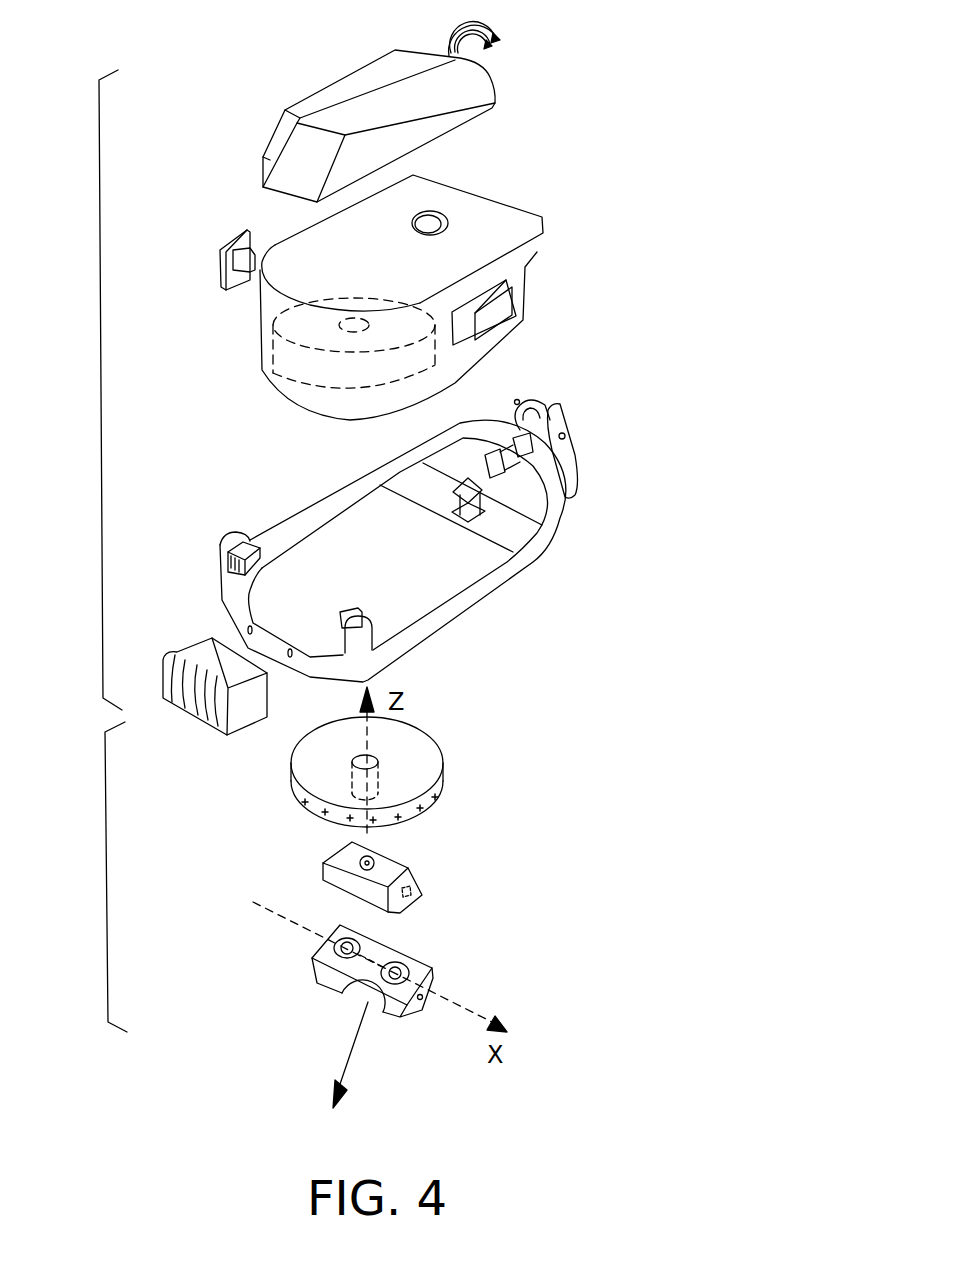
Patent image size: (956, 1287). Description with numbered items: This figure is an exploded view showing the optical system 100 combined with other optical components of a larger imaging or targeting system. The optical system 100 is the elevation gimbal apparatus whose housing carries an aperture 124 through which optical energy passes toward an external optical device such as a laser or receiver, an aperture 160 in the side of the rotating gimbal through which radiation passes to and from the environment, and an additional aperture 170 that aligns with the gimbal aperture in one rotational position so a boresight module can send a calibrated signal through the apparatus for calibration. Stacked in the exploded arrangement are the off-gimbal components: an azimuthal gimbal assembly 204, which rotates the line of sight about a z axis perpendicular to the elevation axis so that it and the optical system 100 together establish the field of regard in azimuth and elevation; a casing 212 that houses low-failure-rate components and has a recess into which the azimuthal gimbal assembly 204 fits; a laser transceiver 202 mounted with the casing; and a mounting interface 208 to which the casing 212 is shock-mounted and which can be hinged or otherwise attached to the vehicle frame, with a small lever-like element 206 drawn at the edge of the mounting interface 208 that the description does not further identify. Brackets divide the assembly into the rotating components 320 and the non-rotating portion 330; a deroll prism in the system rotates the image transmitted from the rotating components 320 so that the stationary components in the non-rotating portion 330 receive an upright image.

The optical system 100 is at (423, 963).
The aperture 124 is at (453, 980).
The aperture 160 is at (357, 990).
The additional aperture 170 is at (347, 940).
The laser transceiver 202 is at (483, 90).
The azimuthal gimbal assembly 204 is at (420, 762).
The latch lever 206 is at (562, 427).
The mounting interface 208 is at (477, 588).
The casing 212 is at (497, 213).
The rotating components 320 is at (84, 877).
The non-rotating portion 330 is at (80, 390).